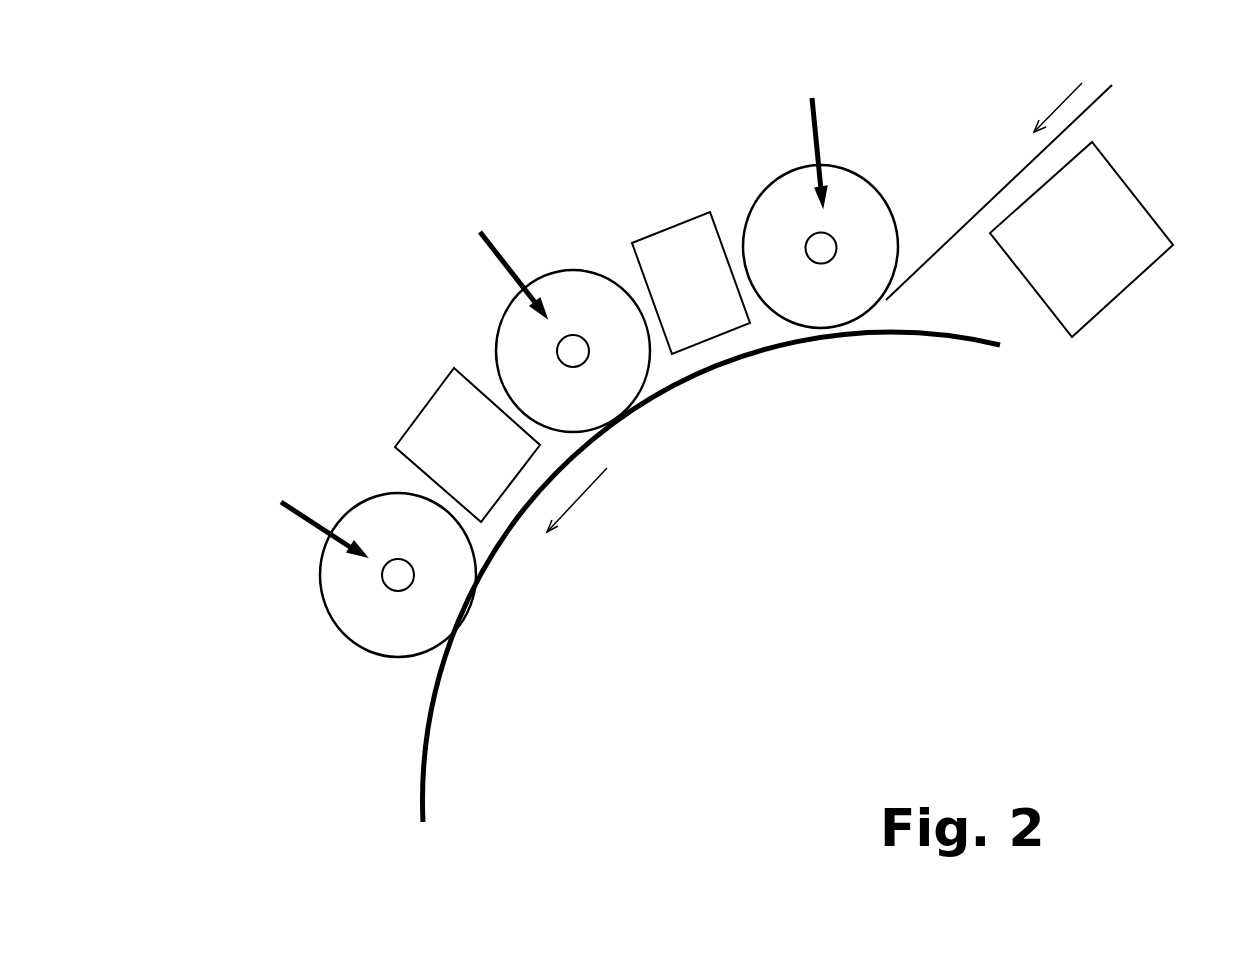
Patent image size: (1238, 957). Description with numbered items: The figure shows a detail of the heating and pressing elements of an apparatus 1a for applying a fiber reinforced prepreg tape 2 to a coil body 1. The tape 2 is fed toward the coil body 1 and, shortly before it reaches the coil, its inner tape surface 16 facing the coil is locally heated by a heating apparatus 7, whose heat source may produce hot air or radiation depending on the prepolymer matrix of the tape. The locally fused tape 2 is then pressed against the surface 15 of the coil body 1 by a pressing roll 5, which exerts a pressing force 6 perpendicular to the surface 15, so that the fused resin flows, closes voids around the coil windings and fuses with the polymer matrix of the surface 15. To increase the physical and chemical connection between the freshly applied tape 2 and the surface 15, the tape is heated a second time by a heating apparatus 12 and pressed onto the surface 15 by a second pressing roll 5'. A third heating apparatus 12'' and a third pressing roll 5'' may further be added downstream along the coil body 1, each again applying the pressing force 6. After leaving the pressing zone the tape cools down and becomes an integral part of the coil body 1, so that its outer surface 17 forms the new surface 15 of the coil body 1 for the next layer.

The coil body 1 is at (608, 676).
The apparatus 1a is at (293, 193).
The tape 2 is at (943, 232).
The pressing roll 5 is at (786, 191).
The second pressing roll 5' is at (516, 291).
The third pressing roll 5'' is at (308, 575).
The pressing force 6 is at (503, 246).
The heating apparatus 7 is at (1104, 224).
The heating apparatus 12 is at (654, 213).
The third heating apparatus 12'' is at (389, 390).
The surface 15 is at (419, 789).
The tape surface 16 is at (928, 265).
The outer surface 17 is at (976, 205).